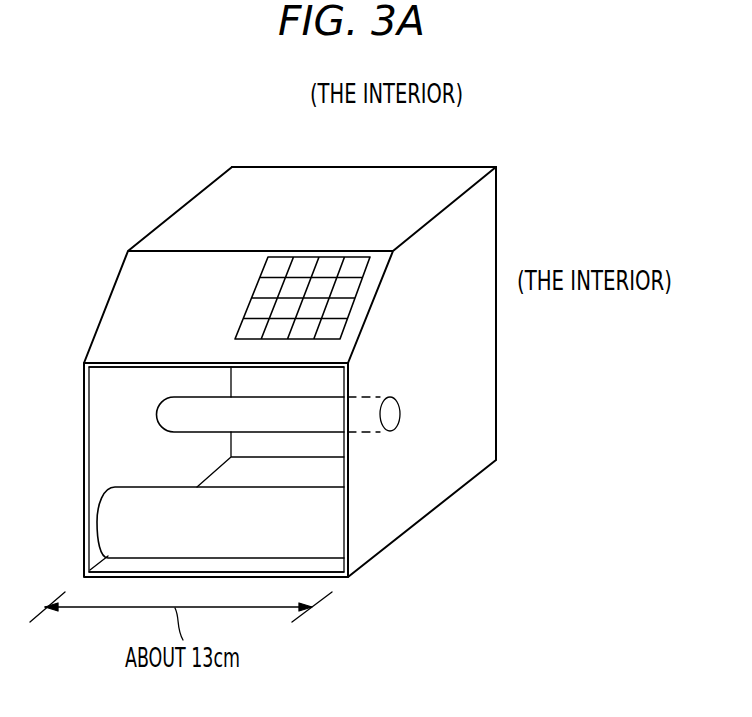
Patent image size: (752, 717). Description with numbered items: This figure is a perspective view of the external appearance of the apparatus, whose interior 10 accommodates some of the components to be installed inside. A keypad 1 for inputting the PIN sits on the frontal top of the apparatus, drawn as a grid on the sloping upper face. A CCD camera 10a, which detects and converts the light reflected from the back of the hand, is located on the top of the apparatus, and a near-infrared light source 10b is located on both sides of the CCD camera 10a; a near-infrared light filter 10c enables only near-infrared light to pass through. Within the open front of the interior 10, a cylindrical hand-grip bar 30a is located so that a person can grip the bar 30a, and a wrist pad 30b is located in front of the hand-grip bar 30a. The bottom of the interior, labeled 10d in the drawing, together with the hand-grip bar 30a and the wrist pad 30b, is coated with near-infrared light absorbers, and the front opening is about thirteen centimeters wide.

The interior 10 is at (380, 167).
The keypad 1 is at (246, 304).
The CCD camera 10a is at (478, 267).
The near-infrared light source 10b is at (419, 217).
The near-infrared light filter 10c is at (200, 367).
The bottom inner wall 10d is at (285, 473).
The cylindrical hand-grip bar 30a is at (323, 420).
The wrist pad 30b is at (110, 528).